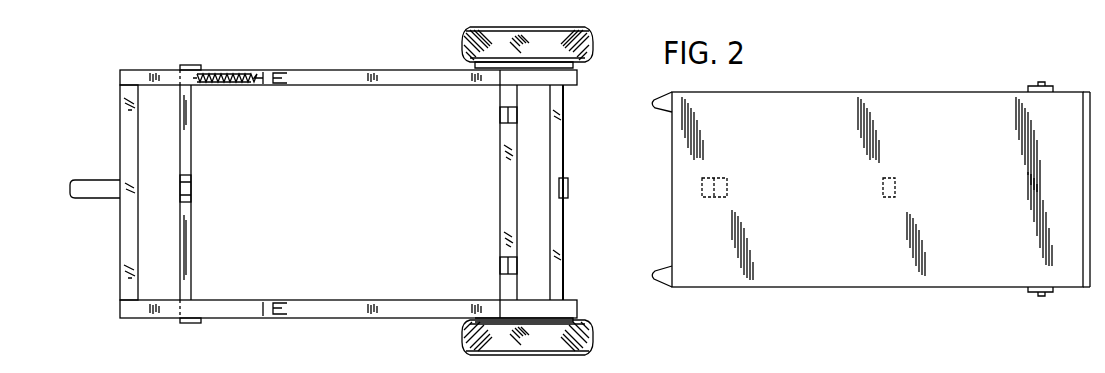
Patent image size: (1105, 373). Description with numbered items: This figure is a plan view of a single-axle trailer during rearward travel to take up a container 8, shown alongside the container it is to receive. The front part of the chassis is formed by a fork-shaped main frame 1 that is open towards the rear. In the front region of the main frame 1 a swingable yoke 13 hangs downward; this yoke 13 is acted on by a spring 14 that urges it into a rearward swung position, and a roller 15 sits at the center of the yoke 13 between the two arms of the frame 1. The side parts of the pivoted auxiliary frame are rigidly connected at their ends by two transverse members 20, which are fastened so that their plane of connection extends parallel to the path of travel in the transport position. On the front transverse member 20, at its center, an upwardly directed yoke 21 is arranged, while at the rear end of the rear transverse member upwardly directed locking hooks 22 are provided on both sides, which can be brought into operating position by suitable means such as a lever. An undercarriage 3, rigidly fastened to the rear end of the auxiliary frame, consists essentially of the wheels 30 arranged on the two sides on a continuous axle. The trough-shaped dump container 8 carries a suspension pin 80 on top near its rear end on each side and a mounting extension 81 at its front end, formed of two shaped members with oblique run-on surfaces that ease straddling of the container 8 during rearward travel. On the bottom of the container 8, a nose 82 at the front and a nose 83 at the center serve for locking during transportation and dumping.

The main frame 1 is at (325, 73).
The undercarriage 3 is at (447, 43).
The container 8 is at (918, 103).
The yoke 13 is at (192, 243).
The spring 14 is at (224, 88).
The roller 15 is at (192, 182).
The transverse members 20 is at (508, 153).
The yoke 21 is at (568, 198).
The locking hook 22 is at (499, 117).
The wheels 30 is at (593, 45).
The suspension pin 80 is at (1036, 84).
The mounting extension 81 is at (660, 106).
The nose 82 is at (710, 200).
The nose 83 is at (888, 199).